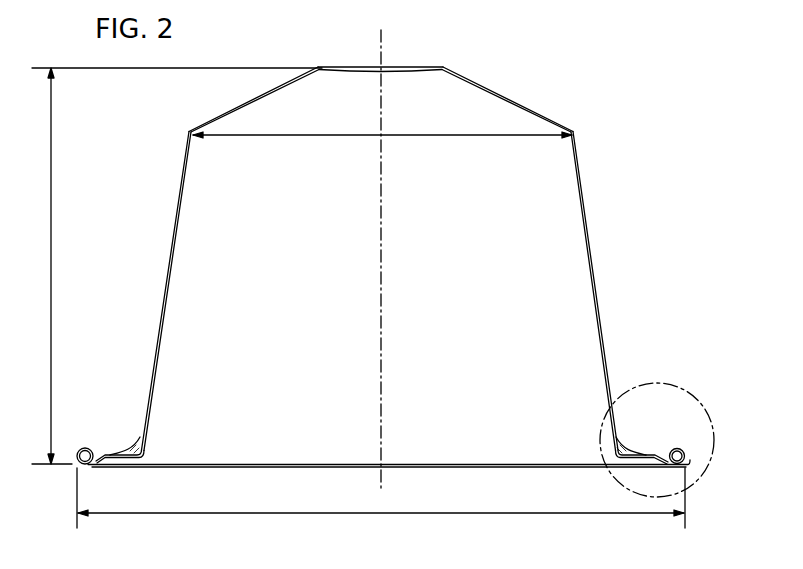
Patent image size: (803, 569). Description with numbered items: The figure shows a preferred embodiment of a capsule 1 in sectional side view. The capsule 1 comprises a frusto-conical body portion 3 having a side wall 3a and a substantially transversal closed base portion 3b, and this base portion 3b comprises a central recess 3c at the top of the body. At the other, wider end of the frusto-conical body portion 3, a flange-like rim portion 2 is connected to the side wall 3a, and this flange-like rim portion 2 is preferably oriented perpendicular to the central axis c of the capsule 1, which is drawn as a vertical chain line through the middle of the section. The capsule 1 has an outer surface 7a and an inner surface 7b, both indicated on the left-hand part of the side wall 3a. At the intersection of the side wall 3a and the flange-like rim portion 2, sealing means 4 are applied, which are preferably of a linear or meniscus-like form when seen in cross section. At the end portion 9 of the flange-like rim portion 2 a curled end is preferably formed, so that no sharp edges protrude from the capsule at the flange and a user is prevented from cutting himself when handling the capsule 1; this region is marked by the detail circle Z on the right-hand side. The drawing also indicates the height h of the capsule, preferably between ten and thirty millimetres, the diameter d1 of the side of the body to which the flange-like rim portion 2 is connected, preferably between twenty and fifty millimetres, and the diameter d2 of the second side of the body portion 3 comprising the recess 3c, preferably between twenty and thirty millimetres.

The capsule 1 is at (640, 108).
The flange-like rim portion 2 is at (657, 452).
The frusto-conical body portion 3 is at (588, 209).
The side wall 3a is at (597, 287).
The closed base portion 3b is at (509, 98).
The central recess 3c is at (397, 67).
The sealing means 4 is at (132, 446).
The outer surface 7a is at (170, 248).
The inner surface 7b is at (170, 278).
The end portion 9 is at (684, 460).
The detail zone Z is at (713, 428).
The central axis c is at (383, 280).
The height h is at (176, 266).
The diameter d1 is at (381, 505).
The diameter d2 is at (382, 125).